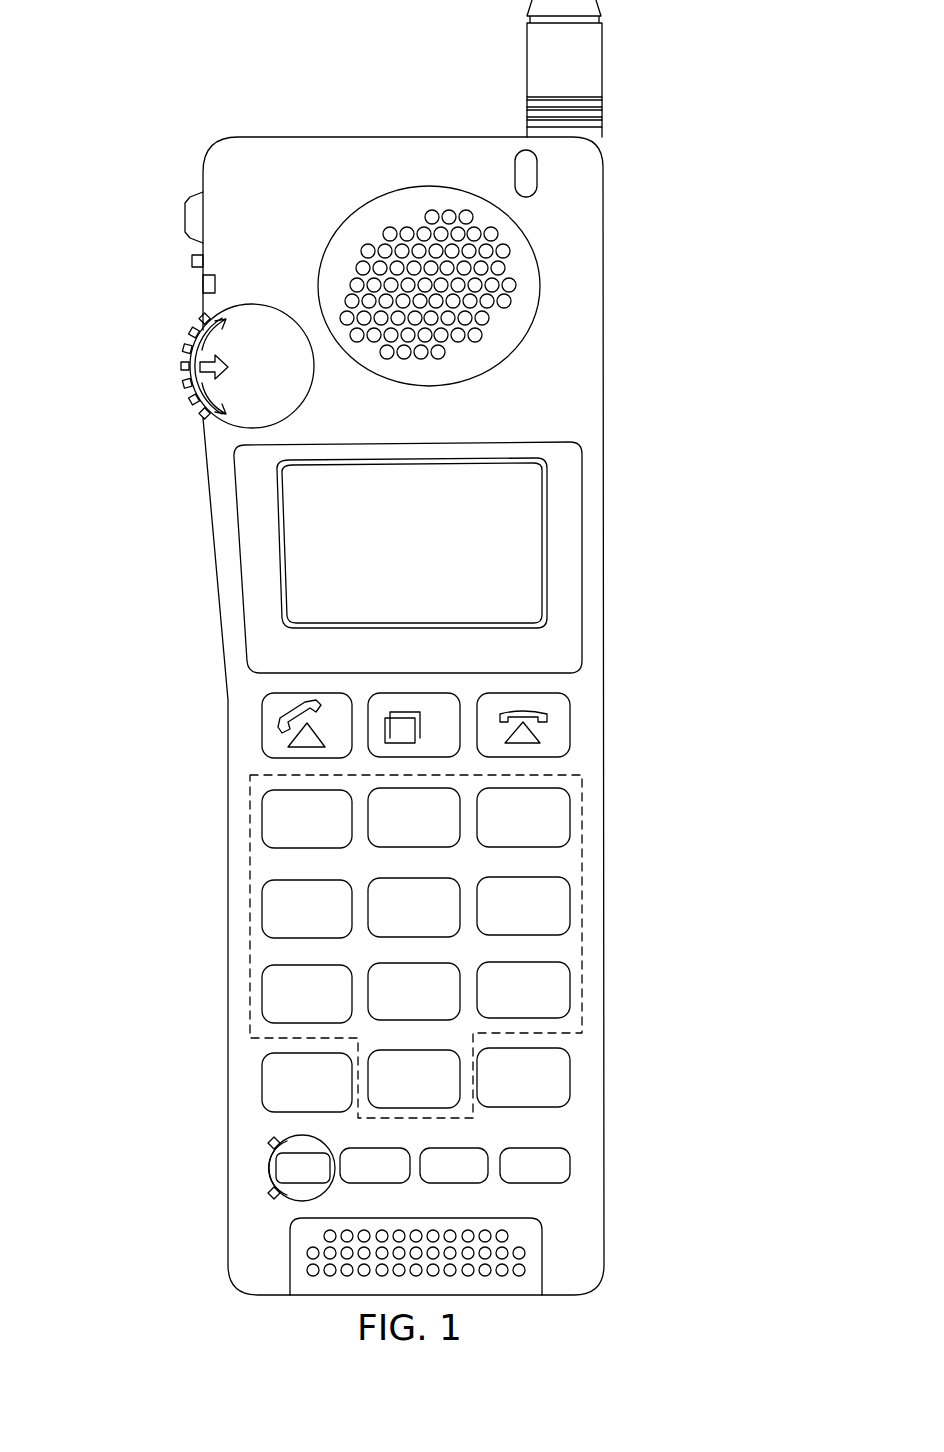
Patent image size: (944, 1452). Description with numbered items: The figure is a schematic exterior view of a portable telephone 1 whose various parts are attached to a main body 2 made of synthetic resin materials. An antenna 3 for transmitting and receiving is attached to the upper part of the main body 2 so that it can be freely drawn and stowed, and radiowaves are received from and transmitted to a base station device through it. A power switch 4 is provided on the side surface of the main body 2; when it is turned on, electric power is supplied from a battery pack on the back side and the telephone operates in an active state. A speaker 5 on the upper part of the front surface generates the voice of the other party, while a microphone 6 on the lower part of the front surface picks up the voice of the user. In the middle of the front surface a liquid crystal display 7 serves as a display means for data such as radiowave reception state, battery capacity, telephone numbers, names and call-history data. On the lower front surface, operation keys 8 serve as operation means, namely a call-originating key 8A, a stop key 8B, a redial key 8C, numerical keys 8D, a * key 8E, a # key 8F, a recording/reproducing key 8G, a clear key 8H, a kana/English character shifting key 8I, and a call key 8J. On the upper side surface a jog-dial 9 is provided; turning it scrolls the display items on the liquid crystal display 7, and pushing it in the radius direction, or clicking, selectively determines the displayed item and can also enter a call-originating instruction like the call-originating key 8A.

The portable telephone 1 is at (728, 70).
The main body 2 is at (603, 350).
The antenna 3 is at (603, 88).
The power switch 4 is at (185, 205).
The speaker 5 is at (378, 235).
The microphone 6 is at (300, 1255).
The liquid crystal display 7 is at (533, 538).
The operation keys 8 is at (633, 884).
The call-originating key 8A is at (262, 712).
The stop key 8B is at (570, 718).
The redial key 8C is at (440, 693).
The numerical keys 8D is at (250, 788).
The * key 8E is at (262, 1078).
The # key 8F is at (570, 1080).
The recording/reproducing key 8G is at (268, 1150).
The clear key 8H is at (357, 1185).
The kana/English character shifting key 8I is at (462, 1183).
The call key 8J is at (572, 1162).
The jog-dial 9 is at (182, 373).